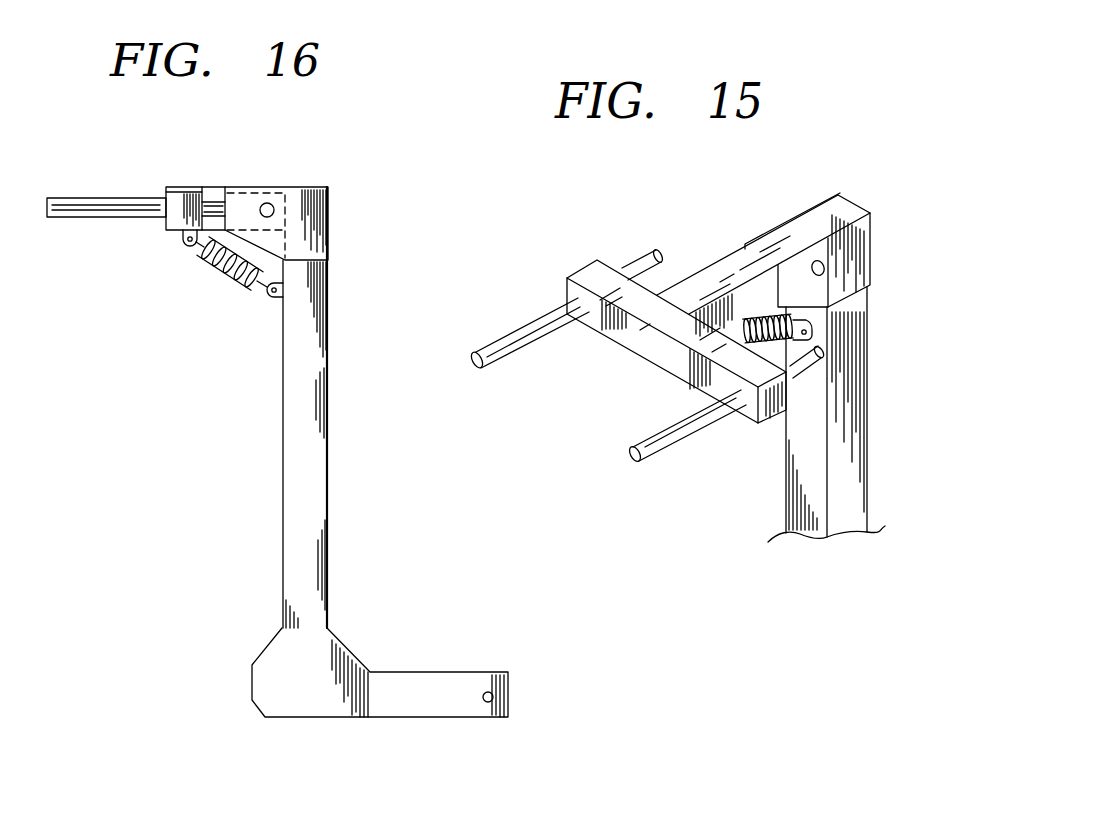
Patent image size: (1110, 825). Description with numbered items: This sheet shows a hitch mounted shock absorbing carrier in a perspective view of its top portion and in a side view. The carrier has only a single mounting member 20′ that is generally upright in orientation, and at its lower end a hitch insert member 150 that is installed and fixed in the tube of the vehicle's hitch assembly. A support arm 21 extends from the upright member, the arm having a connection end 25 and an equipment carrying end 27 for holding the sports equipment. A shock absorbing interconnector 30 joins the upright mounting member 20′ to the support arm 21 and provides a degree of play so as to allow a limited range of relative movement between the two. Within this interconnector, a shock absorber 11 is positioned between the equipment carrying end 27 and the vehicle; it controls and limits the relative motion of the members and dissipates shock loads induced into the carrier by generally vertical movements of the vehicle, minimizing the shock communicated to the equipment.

In FIG. 16, the shock absorber 11 is at (214, 286).
In FIG. 15, the shock absorber 11 is at (798, 310).
In FIG. 16, the mounting member 20′ is at (334, 373).
In FIG. 15, the mounting member 20′ is at (869, 419).
In FIG. 15, the support arm 21 is at (692, 235).
In FIG. 15, the connection end 25 is at (783, 201).
In FIG. 16, the equipment carrying end 27 is at (110, 185).
In FIG. 15, the equipment carrying end 27 is at (506, 312).
In FIG. 16, the shock absorbing interconnector 30 is at (356, 156).
In FIG. 16, the hitch insert member 150 is at (440, 717).